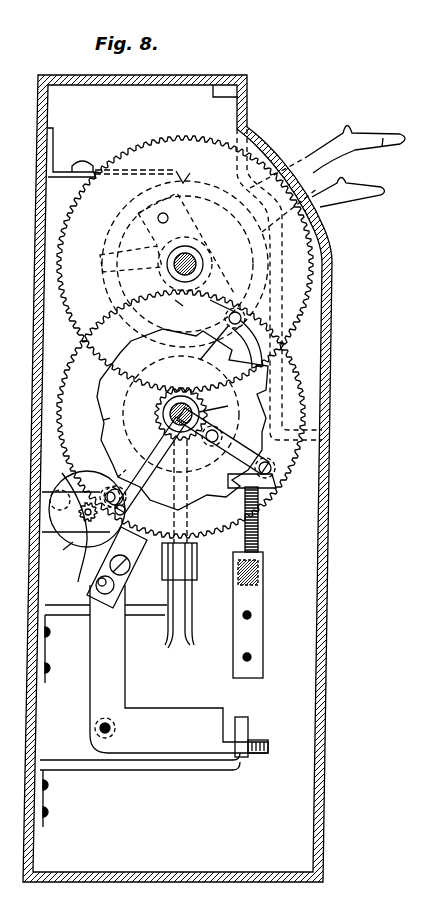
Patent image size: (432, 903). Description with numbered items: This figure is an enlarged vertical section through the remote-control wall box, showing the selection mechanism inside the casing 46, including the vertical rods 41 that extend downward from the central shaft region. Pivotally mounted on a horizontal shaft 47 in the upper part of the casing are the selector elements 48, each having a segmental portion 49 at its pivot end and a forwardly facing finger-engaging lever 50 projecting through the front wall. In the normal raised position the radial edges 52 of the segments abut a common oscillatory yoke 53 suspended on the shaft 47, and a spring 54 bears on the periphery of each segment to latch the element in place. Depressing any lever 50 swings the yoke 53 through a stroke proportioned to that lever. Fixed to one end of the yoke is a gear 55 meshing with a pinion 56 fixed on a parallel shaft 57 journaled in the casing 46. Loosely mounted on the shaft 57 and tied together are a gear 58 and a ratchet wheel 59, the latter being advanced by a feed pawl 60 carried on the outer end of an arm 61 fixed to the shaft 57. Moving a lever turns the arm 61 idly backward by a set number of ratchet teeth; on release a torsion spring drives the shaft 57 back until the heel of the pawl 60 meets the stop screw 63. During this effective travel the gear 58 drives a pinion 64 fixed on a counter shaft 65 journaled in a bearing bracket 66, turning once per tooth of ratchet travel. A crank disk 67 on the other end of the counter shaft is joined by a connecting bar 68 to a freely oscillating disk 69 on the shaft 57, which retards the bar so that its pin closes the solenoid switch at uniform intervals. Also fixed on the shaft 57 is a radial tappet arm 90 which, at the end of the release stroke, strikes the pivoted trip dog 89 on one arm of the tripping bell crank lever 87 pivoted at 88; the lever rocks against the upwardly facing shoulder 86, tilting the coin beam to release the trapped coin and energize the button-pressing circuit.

The rods 41 is at (188, 522).
The wall box or casing 46 is at (250, 113).
The shaft or pivot rod 47 is at (176, 268).
The selector element 48 is at (252, 240).
The segmental portion 49 is at (107, 227).
The finger-engaging lever 50 is at (365, 190).
The radial edge 52 is at (214, 266).
The oscillatory bar or yoke 53 is at (180, 312).
The spring 54 is at (185, 178).
The gear 55 is at (172, 136).
The pinion 56 is at (163, 424).
The shaft 57 is at (222, 424).
The gear 58 is at (181, 414).
The ratchet wheel 59 is at (103, 420).
The feed pawl 60 is at (285, 345).
The arm 61 is at (195, 348).
The stop screw 63 is at (259, 545).
The pinion 64 is at (83, 538).
The counter shaft 65 is at (66, 522).
The bearing bracket 66 is at (60, 516).
The crank disk 67 is at (61, 561).
The connecting link or bar 68 is at (238, 483).
The oscillating disk 69 is at (104, 461).
The shoulder 86 is at (270, 745).
The tripping bell crank lever 87 is at (125, 665).
The pivot 88 is at (100, 730).
The trip dog 89 is at (160, 525).
The tappet arm 90 is at (130, 506).